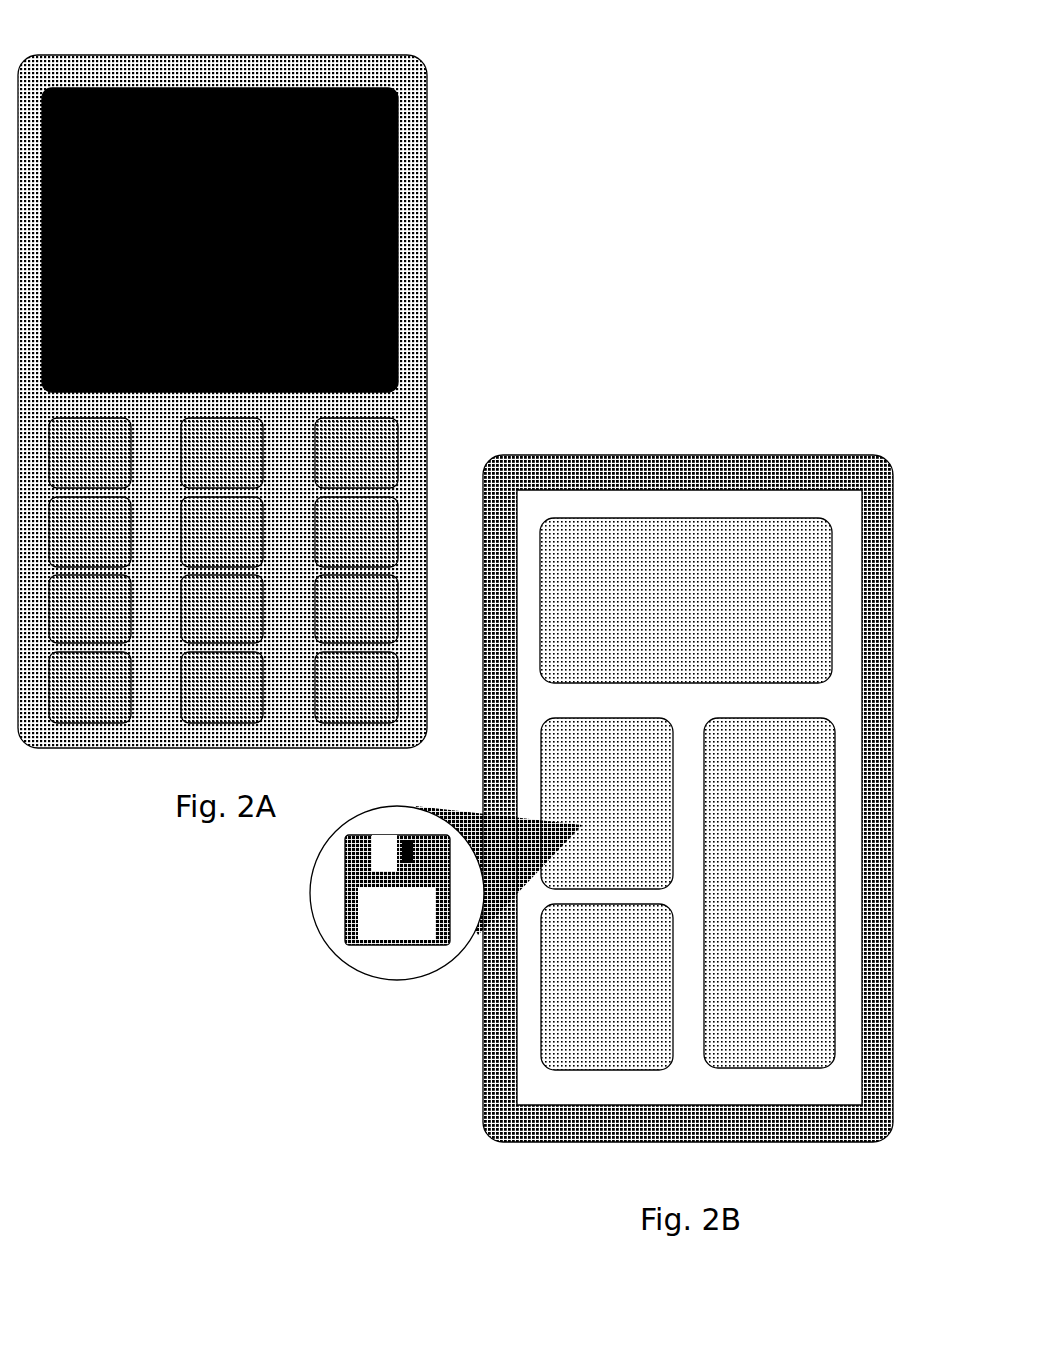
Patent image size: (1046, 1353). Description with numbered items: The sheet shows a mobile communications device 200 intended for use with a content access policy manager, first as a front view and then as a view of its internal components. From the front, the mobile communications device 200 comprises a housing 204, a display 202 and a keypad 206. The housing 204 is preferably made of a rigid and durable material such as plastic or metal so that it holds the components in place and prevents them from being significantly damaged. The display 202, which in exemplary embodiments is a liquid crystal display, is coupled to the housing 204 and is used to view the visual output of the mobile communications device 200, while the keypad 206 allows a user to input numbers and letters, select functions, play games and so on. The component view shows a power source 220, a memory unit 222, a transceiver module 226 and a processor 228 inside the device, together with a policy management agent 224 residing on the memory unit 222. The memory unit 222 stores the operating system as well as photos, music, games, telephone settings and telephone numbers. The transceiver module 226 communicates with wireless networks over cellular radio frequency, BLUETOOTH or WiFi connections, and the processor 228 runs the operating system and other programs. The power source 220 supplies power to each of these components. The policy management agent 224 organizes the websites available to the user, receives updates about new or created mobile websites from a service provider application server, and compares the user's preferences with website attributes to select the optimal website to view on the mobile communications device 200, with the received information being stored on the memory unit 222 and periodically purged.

In FIG. 2A, the mobile communications device 200 is at (285, 401).
In FIG. 2B, the mobile communications device 200 is at (688, 750).
In FIG. 2A, the display 202 is at (287, 240).
In FIG. 2A, the housing 204 is at (320, 501).
In FIG. 2A, the keypad 206 is at (154, 701).
In FIG. 2B, the power source 220 is at (638, 545).
In FIG. 2B, the memory unit 222 is at (552, 768).
In FIG. 2B, the policy management agent 224 is at (422, 922).
In FIG. 2B, the transceiver module 226 is at (540, 992).
In FIG. 2B, the processor 228 is at (801, 958).